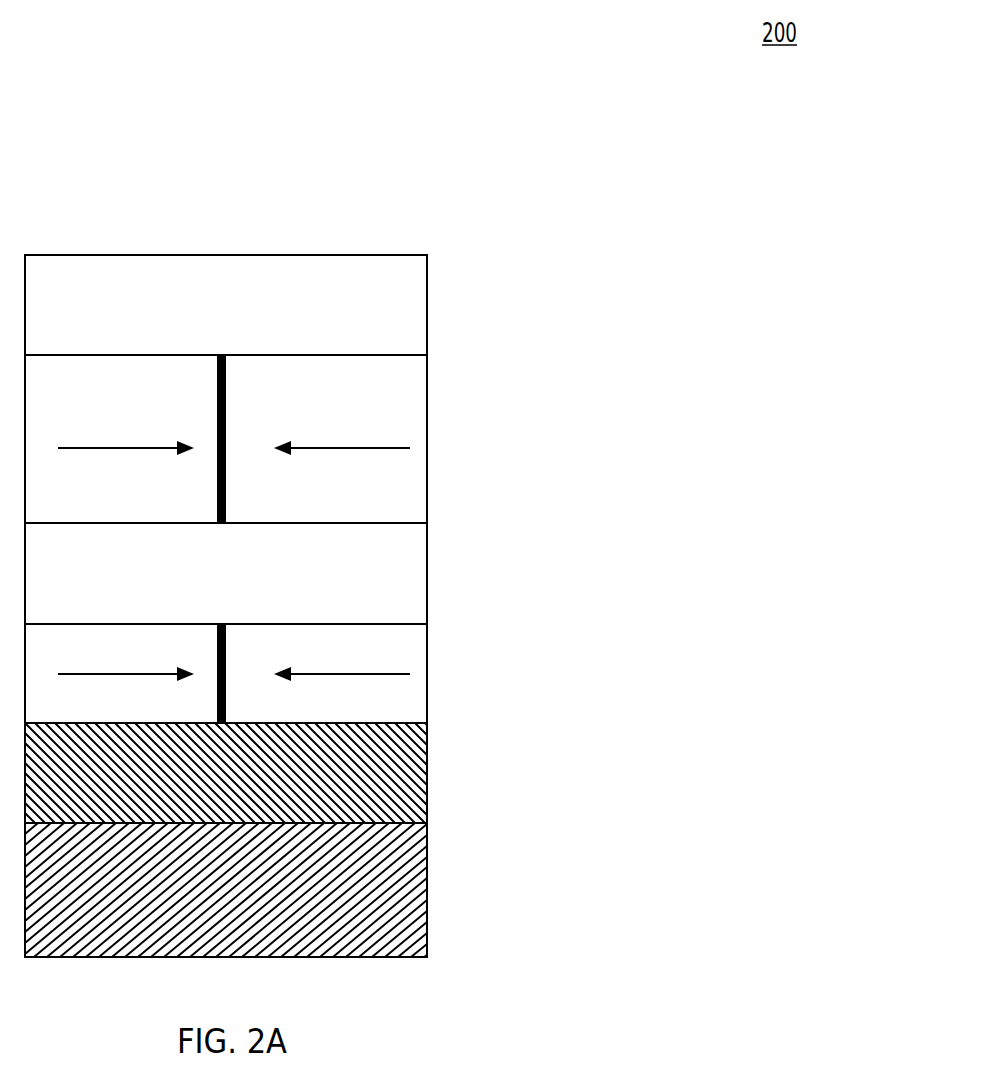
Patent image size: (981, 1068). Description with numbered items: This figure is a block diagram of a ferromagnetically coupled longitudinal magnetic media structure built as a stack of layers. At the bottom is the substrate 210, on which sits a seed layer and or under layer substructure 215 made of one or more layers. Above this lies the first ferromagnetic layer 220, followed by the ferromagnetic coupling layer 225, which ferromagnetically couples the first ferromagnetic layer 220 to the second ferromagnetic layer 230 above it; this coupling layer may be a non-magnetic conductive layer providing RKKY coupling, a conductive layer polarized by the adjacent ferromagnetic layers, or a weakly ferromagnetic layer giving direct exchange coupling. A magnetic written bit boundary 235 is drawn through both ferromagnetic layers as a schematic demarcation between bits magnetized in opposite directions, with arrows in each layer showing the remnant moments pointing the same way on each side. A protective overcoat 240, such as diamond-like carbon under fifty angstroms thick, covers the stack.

The substrate 210 is at (427, 880).
The seed layer and or under layer substructure 215 is at (427, 770).
The first ferromagnetic layer 220 is at (427, 673).
The ferromagnetic coupling layer 225 is at (427, 572).
The second ferromagnetic layer 230 is at (427, 438).
The magnetic written bit boundary 235 is at (227, 402).
The protective overcoat 240 is at (427, 303).